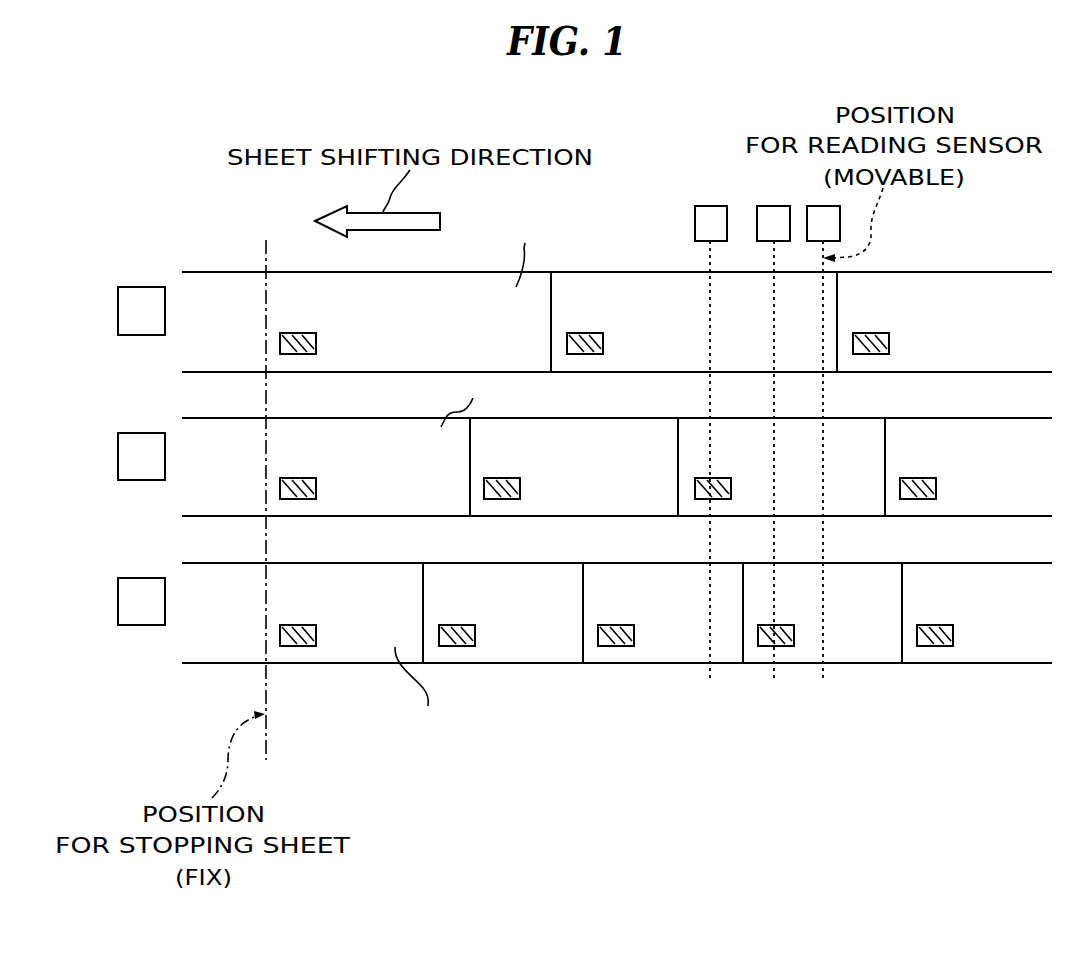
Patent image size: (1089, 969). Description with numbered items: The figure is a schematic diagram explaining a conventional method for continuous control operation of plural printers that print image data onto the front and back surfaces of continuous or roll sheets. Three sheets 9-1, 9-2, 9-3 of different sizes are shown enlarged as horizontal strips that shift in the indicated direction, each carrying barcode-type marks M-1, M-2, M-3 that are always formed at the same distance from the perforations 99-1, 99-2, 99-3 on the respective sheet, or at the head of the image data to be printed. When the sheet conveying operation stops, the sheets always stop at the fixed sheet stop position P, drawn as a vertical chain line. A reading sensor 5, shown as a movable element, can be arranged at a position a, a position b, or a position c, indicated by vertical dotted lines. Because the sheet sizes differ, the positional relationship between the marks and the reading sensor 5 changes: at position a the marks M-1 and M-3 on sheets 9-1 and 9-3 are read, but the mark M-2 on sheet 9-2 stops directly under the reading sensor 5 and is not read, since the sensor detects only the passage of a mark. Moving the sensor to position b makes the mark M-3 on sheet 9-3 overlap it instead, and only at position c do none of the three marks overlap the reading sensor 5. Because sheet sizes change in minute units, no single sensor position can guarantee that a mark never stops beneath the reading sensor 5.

The reading sensor 5 is at (693, 222).
The sheet 9-1 is at (140, 287).
The sheet 9-2 is at (140, 433).
The sheet 9-3 is at (140, 578).
The perforation 99-1 is at (266, 330).
The perforation 99-2 is at (266, 480).
The perforation 99-3 is at (266, 627).
The mark M-1 is at (294, 333).
The mark M-2 is at (294, 478).
The mark M-3 is at (293, 646).
The sheet stop position P is at (263, 515).
The position a is at (708, 476).
The position b is at (772, 476).
The position c is at (821, 476).